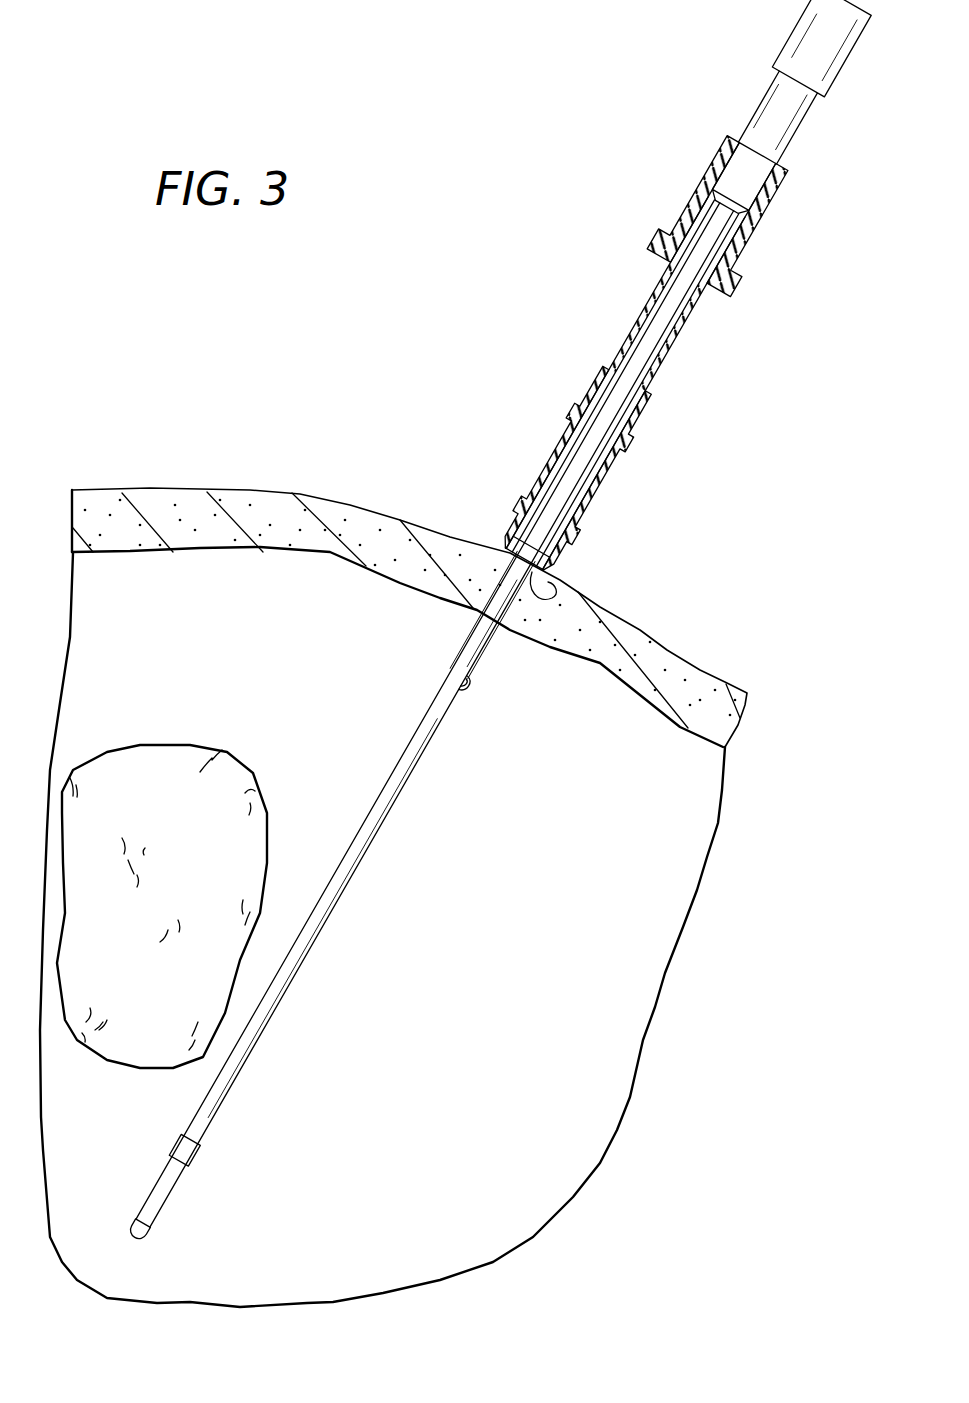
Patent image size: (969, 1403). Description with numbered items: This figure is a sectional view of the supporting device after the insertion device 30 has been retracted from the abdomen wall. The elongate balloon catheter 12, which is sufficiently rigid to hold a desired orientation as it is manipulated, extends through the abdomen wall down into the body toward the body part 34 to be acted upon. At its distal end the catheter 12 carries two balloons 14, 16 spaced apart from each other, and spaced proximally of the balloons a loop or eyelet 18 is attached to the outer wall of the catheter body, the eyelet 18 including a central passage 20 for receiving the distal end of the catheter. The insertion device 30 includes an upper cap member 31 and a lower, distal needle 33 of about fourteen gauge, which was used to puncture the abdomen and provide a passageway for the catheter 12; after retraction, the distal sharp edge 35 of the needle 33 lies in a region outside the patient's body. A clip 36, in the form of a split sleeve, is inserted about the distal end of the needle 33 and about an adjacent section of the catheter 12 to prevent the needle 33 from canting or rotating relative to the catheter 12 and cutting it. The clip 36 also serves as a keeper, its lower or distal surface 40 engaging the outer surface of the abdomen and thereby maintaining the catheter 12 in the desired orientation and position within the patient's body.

The balloon catheter 12 is at (672, 323).
The balloon 14 is at (143, 1233).
The balloon 16 is at (190, 1157).
The loop or eyelet 18 is at (466, 697).
The central passage 20 is at (470, 690).
The insertion device 30 is at (741, 281).
The upper cap member 31 is at (768, 211).
The needle 33 is at (657, 350).
The body part 34 is at (168, 760).
The distal sharp edge 35 is at (549, 562).
The clip 36 is at (604, 492).
The distal surface 40 is at (547, 598).